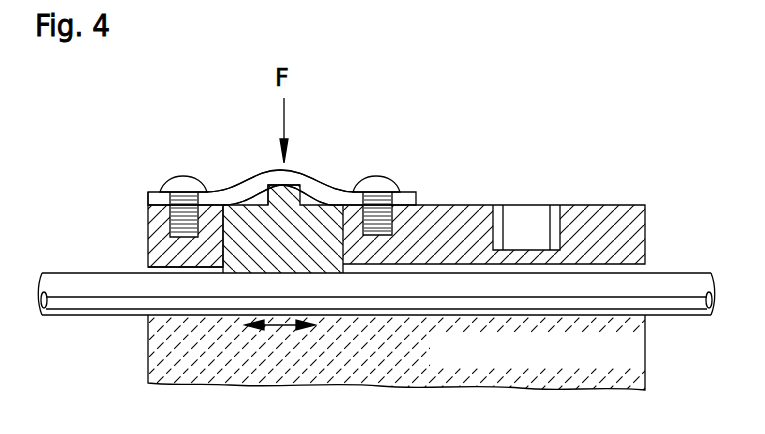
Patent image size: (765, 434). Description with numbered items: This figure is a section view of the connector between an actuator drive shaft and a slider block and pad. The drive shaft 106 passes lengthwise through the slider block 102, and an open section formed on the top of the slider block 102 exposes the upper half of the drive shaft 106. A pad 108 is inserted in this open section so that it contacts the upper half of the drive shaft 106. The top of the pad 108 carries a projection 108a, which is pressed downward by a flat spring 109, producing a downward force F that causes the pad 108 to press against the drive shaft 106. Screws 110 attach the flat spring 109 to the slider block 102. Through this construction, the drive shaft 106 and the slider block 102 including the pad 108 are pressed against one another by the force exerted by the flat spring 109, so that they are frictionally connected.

The slider block 102 is at (617, 371).
The drive shaft 106 is at (674, 286).
The pad 108 is at (247, 200).
The projection 108a is at (288, 192).
The flat spring 109 is at (328, 193).
The screws 110 is at (166, 185).